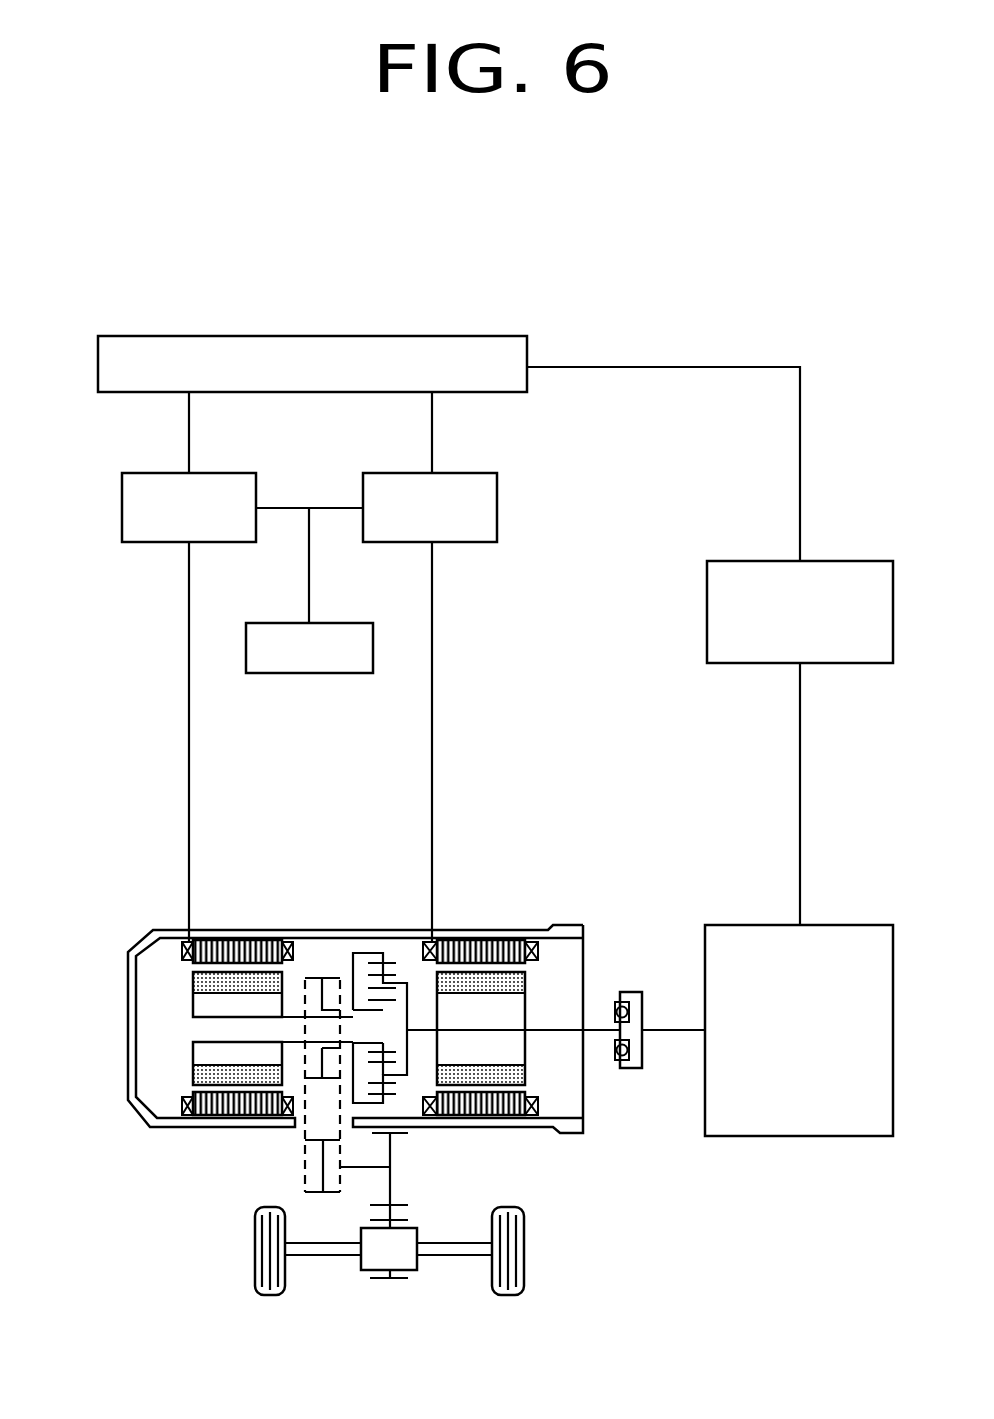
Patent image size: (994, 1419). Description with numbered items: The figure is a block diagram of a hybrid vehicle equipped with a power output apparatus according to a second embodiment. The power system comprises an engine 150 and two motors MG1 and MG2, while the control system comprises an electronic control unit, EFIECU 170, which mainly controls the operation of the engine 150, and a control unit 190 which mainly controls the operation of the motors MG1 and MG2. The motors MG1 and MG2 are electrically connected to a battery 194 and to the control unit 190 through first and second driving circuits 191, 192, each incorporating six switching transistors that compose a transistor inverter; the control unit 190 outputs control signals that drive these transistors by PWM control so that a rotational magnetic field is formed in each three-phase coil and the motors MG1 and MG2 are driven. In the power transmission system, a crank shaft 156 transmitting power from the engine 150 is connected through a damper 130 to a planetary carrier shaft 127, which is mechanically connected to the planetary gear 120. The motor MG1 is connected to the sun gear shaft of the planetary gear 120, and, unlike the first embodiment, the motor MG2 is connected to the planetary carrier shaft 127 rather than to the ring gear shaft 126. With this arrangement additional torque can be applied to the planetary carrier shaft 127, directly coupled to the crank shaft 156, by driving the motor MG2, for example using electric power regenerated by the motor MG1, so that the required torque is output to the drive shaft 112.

The control unit 190 is at (397, 336).
The second driving circuit 192 is at (232, 473).
The first driving circuit 191 is at (498, 490).
The battery 194 is at (327, 674).
The electronic control unit (EFIECU) 170 is at (857, 561).
The engine 150 is at (738, 925).
The damper 130 is at (630, 992).
The crank shaft 156 is at (672, 1032).
The ring gear shaft 126 is at (203, 1043).
The planetary carrier shaft 127 is at (553, 1030).
The planetary gear 120 is at (360, 918).
The drive shaft 112 is at (365, 1168).
The motor MG1 is at (230, 918).
The motor MG2 is at (492, 918).